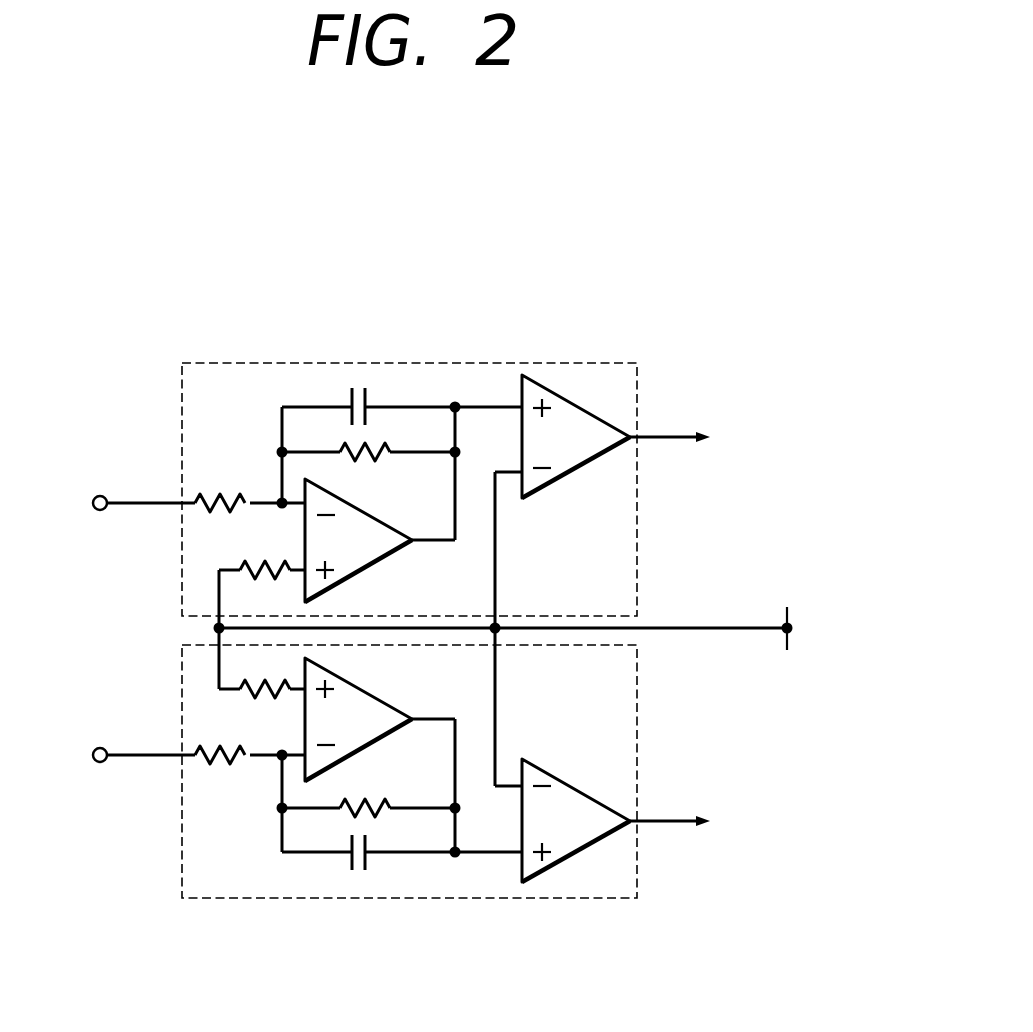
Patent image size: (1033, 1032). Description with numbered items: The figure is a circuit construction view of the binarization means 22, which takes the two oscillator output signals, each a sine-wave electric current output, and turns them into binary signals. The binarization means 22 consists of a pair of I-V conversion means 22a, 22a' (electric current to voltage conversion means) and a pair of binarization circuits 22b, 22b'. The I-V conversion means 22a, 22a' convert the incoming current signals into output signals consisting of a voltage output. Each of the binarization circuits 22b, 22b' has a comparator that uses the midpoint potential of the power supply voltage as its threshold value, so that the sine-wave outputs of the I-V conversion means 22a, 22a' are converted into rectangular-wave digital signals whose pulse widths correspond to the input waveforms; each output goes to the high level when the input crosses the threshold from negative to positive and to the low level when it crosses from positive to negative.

The binarization means 22 is at (479, 596).
The I-V conversion means 22a is at (358, 444).
The binarization circuit 22b is at (571, 374).
The I-V conversion means 22a' is at (358, 820).
The binarization circuit 22b' is at (634, 793).